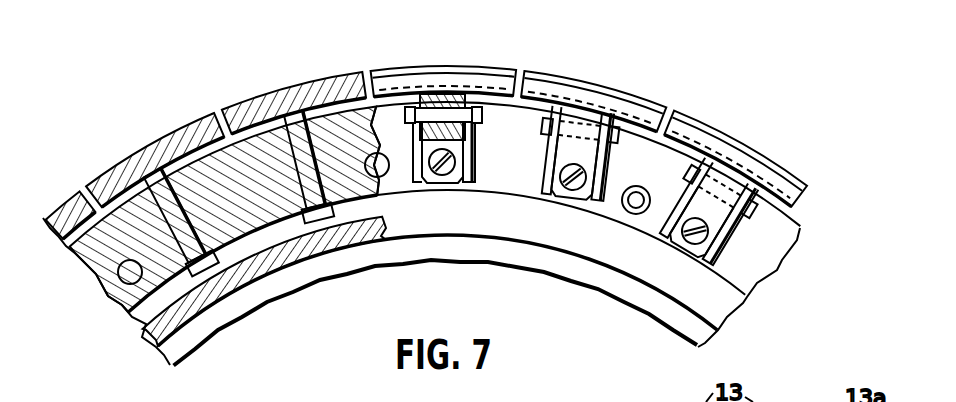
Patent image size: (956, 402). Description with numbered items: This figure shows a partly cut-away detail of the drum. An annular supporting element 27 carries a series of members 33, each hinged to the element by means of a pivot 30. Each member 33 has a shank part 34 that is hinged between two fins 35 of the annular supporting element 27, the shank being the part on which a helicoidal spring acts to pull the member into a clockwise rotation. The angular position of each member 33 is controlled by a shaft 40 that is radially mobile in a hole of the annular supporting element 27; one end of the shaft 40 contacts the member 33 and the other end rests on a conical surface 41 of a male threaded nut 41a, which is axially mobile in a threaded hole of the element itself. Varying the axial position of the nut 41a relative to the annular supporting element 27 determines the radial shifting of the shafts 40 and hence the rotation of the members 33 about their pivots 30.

The annular supporting element 27 is at (339, 137).
The pivot 30 is at (443, 108).
The member 33 is at (236, 97).
The shank part 34 is at (447, 186).
The fin 35 is at (470, 150).
The shaft 40 is at (158, 172).
The conical surface 41 is at (160, 297).
The male threaded nut 41a is at (152, 322).